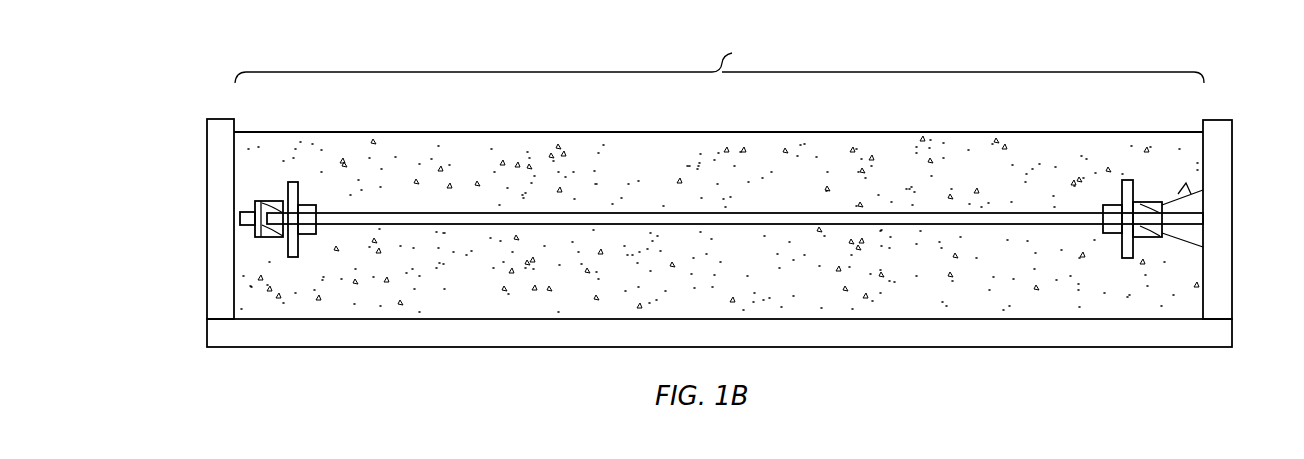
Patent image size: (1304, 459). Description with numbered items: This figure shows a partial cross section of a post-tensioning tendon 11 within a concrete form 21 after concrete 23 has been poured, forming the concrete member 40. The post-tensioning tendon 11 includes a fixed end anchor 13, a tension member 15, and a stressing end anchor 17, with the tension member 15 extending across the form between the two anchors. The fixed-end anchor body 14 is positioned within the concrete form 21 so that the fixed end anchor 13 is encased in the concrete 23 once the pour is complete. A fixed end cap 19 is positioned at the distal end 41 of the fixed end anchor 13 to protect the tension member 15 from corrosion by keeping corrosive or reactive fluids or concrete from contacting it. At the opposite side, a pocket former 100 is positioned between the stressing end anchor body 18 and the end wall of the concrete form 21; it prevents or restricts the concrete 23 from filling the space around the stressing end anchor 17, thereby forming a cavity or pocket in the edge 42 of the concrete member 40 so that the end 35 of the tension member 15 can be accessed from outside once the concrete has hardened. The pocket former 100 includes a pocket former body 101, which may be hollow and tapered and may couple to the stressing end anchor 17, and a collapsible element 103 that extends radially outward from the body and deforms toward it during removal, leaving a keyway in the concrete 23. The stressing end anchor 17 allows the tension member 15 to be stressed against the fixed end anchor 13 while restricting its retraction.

The post-tensioning tendon 11 is at (719, 54).
The fixed end anchor 13 is at (298, 182).
The fixed-end anchor body 14 is at (300, 245).
The tension member 15 is at (770, 213).
The stressing end anchor 17 is at (1107, 197).
The stressing end anchor body 18 is at (1130, 240).
The fixed end cap 19 is at (248, 202).
The concrete form 21 is at (1085, 332).
The concrete 23 is at (1015, 290).
The end of tension member 35 is at (1197, 194).
The concrete member 40 is at (632, 152).
The distal end of fixed end anchor 41 is at (253, 237).
The edge of concrete member 42 is at (1203, 237).
The pocket former 100 is at (1215, 220).
The pocket former body 101 is at (1203, 178).
The collapsible element 103 is at (1192, 247).